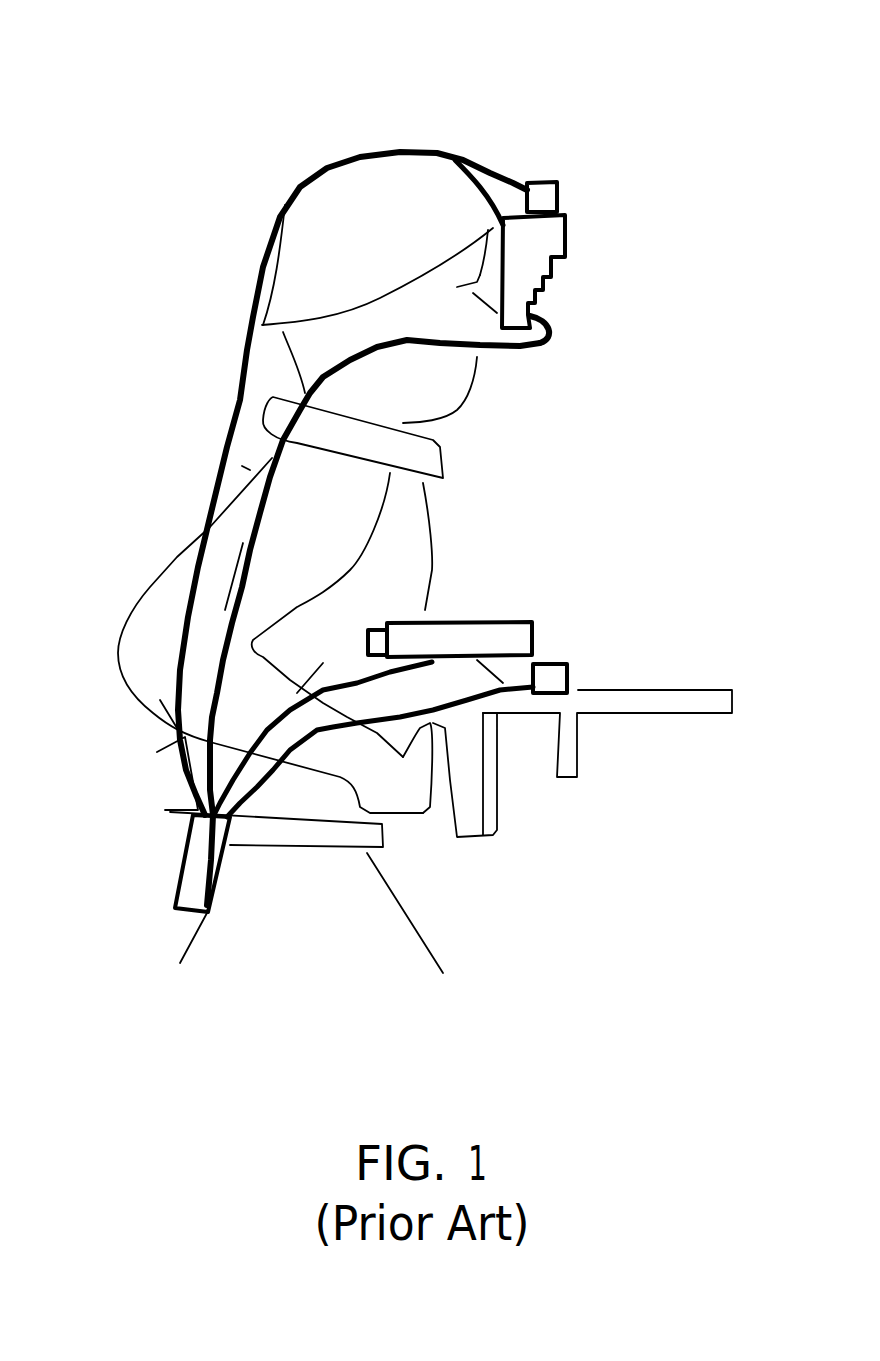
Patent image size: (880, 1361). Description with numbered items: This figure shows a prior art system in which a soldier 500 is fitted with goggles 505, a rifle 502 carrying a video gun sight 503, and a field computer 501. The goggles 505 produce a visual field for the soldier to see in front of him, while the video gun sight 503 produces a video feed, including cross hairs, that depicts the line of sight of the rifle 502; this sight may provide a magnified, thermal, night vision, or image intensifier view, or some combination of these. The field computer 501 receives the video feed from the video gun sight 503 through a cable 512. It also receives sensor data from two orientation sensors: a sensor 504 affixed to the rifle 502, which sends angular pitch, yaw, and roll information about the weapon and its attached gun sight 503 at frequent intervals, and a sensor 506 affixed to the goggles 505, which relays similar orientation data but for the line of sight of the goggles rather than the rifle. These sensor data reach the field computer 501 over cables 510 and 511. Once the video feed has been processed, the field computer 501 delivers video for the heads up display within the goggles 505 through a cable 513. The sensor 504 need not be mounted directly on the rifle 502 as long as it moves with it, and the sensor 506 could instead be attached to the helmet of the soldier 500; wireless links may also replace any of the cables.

The soldier 500 is at (486, 64).
The field computer 501 is at (187, 850).
The rifle 502 is at (580, 733).
The video gun sight 503 is at (502, 623).
The orientation sensor 504 is at (558, 664).
The goggles 505 is at (563, 248).
The orientation sensor 506 is at (557, 192).
The cable 510 is at (447, 708).
The cable 511 is at (263, 250).
The cable 512 is at (340, 680).
The cable 513 is at (522, 347).